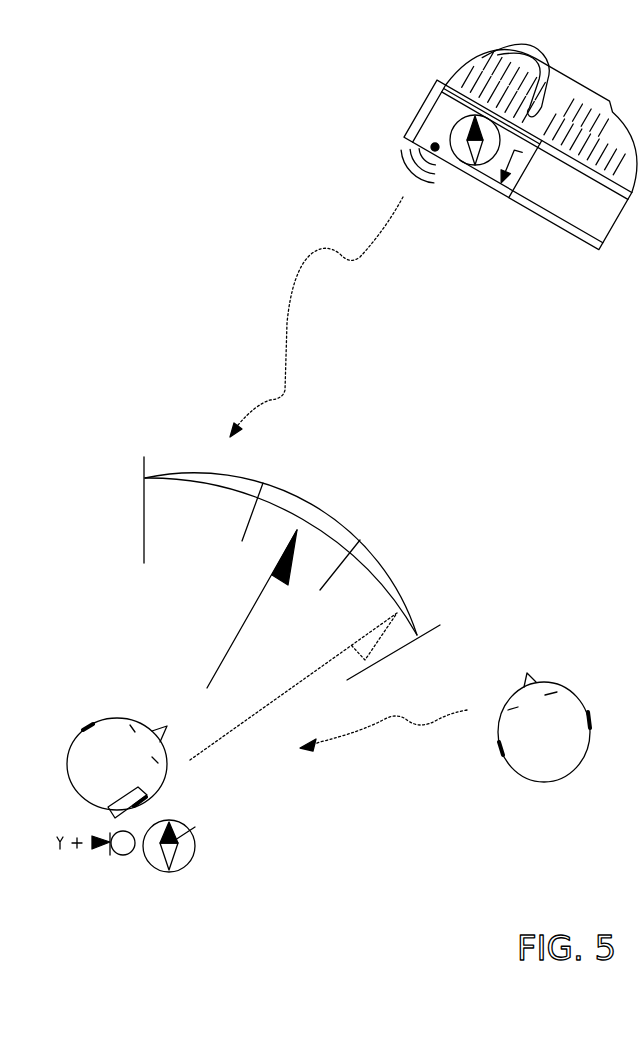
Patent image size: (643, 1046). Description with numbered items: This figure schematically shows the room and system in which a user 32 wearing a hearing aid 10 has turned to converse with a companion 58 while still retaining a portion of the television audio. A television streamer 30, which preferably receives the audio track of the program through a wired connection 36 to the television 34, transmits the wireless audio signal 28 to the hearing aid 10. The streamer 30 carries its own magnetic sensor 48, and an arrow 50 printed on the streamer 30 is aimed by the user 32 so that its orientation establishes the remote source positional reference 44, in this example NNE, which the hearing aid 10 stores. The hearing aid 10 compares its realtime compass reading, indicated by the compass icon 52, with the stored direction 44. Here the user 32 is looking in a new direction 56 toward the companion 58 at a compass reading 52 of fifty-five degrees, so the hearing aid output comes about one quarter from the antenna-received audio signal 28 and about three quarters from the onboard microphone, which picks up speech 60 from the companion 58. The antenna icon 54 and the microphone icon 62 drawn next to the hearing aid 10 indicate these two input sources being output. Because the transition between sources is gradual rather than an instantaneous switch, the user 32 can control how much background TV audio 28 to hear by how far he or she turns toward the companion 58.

The hearing aid 10 is at (157, 795).
The wireless audio signal 28 is at (300, 270).
The television streamer 30 is at (442, 118).
The user 32 is at (100, 742).
The television 34 is at (563, 213).
The wired connection 36 is at (490, 62).
The remote source positional reference 44 is at (240, 622).
The magnetic sensor 48 is at (488, 166).
The arrow 50 is at (513, 162).
The compass icon 52 is at (178, 867).
The antenna icon 54 is at (57, 843).
The new direction 56 is at (278, 695).
The companion 58 is at (520, 755).
The speech 60 is at (400, 718).
The microphone icon 62 is at (117, 850).